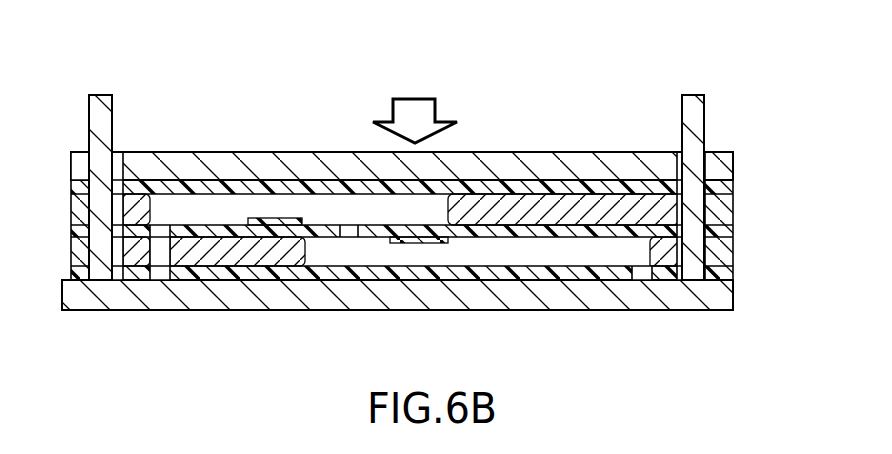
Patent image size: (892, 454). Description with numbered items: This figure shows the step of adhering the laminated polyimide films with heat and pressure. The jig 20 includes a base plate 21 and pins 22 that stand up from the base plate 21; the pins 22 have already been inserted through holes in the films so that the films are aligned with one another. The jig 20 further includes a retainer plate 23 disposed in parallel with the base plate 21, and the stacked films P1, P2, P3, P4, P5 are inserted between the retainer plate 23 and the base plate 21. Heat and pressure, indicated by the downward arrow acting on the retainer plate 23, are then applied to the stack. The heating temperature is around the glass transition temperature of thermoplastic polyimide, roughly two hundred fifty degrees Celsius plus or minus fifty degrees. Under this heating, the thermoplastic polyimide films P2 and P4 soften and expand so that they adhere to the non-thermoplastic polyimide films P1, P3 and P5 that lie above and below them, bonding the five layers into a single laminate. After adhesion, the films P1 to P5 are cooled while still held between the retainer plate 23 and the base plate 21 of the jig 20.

The jig 20 is at (435, 201).
The base plate 21 is at (507, 300).
The pins 22 is at (103, 100).
The retainer plate 23 is at (561, 160).
The non-thermoplastic polyimide film P1 is at (735, 187).
The thermoplastic polyimide film P2 is at (735, 210).
The non-thermoplastic polyimide film P3 is at (735, 231).
The thermoplastic polyimide film P4 is at (735, 252).
The non-thermoplastic polyimide film P5 is at (735, 273).